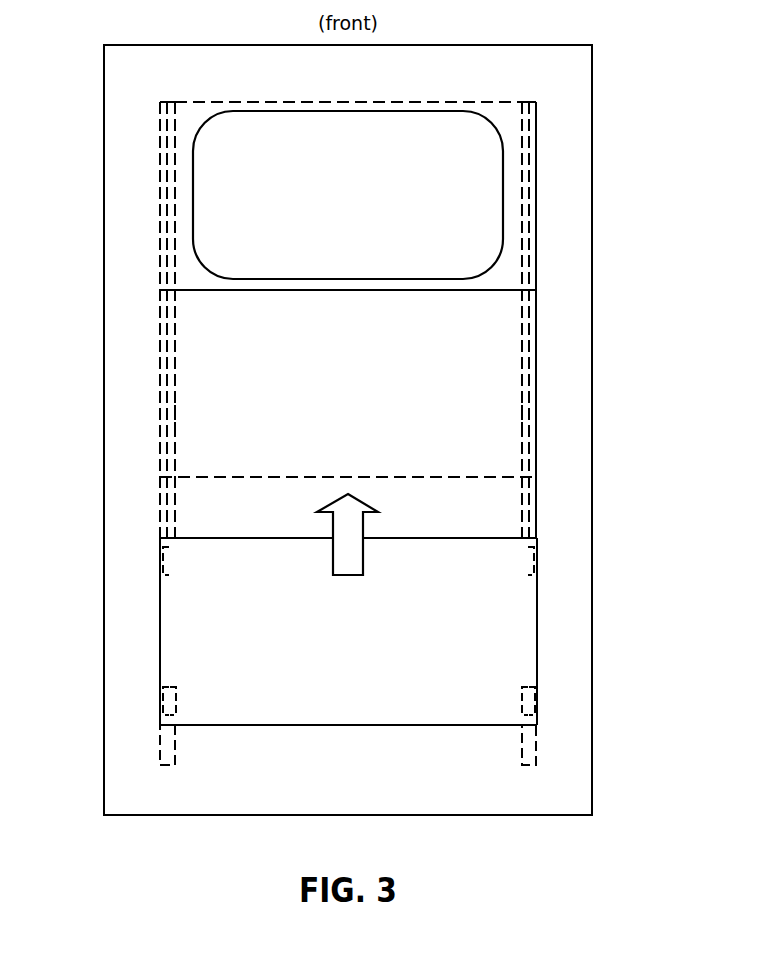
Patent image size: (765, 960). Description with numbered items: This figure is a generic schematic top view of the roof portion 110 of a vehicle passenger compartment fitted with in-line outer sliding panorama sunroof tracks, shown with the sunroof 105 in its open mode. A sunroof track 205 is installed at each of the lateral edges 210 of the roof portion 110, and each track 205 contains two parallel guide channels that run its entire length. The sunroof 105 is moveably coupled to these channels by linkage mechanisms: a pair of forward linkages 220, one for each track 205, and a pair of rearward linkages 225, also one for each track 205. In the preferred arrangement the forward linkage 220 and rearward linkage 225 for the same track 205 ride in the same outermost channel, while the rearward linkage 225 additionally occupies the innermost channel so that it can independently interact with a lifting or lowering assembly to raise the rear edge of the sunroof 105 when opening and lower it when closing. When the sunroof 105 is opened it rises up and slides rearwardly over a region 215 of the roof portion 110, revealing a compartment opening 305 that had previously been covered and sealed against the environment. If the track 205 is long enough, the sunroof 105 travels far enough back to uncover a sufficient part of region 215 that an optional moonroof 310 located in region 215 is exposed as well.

The sunroof 105 is at (331, 640).
The roof portion 110 is at (123, 102).
The sunroof track 205 is at (173, 420).
The lateral edges 210 is at (113, 485).
The region 215 is at (565, 338).
The forward linkage 220 is at (167, 565).
The rearward linkage 225 is at (175, 710).
The compartment opening 305 is at (331, 206).
The moonroof 310 is at (331, 392).